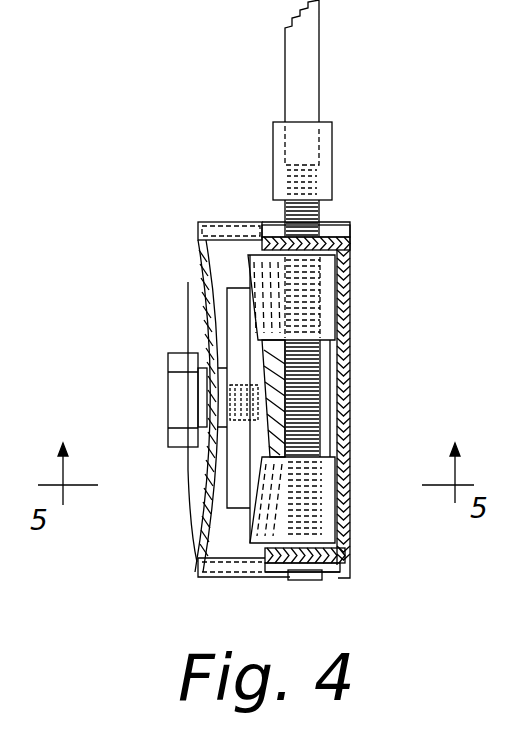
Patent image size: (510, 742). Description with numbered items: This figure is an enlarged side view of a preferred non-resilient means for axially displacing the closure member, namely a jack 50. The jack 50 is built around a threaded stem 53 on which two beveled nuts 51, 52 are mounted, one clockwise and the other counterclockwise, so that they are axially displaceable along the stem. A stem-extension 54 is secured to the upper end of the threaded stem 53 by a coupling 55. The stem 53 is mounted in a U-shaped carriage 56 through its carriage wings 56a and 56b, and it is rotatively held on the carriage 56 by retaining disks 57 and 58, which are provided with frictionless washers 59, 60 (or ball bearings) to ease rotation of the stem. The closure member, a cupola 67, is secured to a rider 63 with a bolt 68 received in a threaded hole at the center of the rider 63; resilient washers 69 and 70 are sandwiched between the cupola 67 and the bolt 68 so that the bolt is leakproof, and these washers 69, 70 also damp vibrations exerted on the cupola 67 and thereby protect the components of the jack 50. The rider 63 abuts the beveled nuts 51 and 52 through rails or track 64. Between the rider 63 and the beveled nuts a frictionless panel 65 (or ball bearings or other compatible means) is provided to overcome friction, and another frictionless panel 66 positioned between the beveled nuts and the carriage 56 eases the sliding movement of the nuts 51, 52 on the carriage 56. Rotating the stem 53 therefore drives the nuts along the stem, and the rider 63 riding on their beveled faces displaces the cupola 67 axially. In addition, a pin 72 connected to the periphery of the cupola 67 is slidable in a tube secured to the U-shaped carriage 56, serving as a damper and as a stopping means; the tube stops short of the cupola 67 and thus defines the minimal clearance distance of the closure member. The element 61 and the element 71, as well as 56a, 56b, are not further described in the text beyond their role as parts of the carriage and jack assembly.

The jack 50 is at (400, 276).
The beveled nut 51 is at (352, 322).
The beveled nut 52 is at (344, 505).
The threaded stem 53 is at (346, 382).
The stem-extension 54 is at (303, 85).
The coupling 55 is at (335, 150).
The U-shaped carriage 56 is at (355, 358).
The carriage wing 56a is at (350, 248).
The carriage wing 56b is at (348, 556).
The retaining disk 57 is at (350, 228).
The retaining disk 58 is at (343, 578).
The frictionless washer 59 is at (327, 235).
The frictionless washer 60 is at (328, 578).
The wedge 61 is at (346, 427).
The rider 63 is at (238, 488).
The rails or track 64 is at (268, 450).
The frictionless panel 65 is at (277, 432).
The frictionless panel 66 is at (348, 450).
The cupola 67 is at (190, 272).
The bolt 68 is at (183, 408).
The resilient washer 69 is at (225, 373).
The resilient washer 70 is at (200, 368).
The bottom plate 71 is at (205, 578).
The pin 72 is at (225, 222).